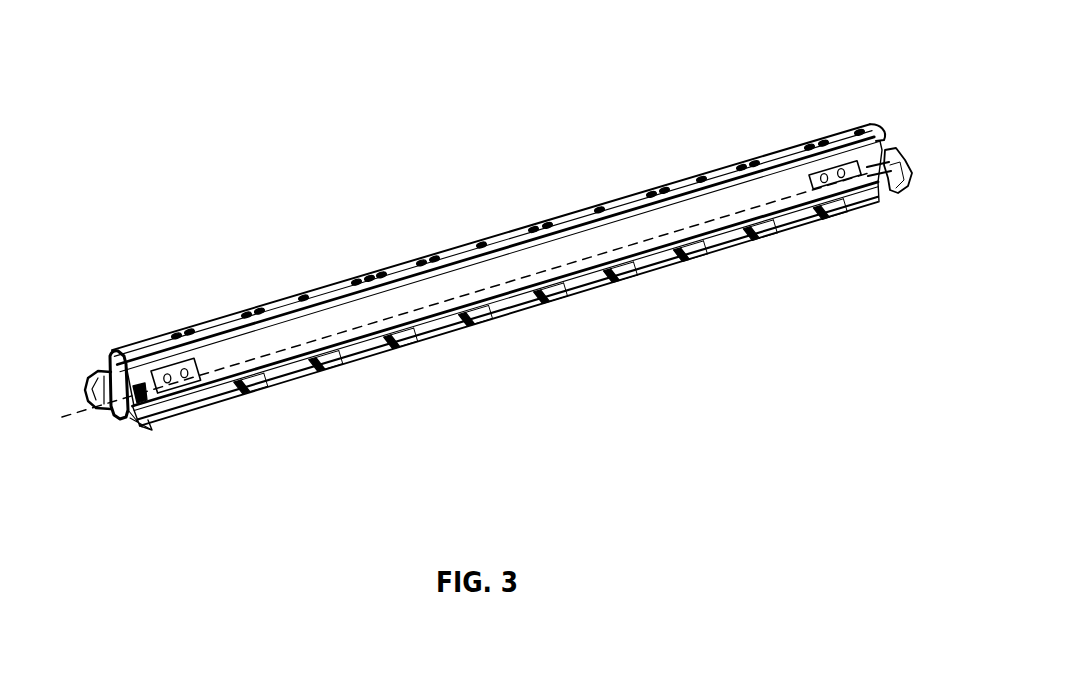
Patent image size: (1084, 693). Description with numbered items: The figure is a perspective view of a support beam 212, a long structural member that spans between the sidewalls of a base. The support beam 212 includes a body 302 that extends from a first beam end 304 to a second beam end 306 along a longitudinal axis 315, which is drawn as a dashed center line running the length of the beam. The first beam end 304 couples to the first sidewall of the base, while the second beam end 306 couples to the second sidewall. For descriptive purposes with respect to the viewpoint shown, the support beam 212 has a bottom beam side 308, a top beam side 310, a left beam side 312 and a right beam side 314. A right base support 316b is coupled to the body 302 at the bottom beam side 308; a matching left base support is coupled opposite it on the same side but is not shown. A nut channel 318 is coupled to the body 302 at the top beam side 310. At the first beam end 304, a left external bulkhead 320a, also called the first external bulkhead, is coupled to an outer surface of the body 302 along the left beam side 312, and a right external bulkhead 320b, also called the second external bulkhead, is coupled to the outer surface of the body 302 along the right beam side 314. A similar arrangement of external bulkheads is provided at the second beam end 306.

The support beam 212 is at (655, 225).
The body 302 is at (480, 293).
The first beam end 304 is at (97, 410).
The second beam end 306 is at (880, 112).
The bottom beam side 308 is at (506, 326).
The top beam side 310 is at (471, 270).
The left beam side 312 is at (248, 311).
The right beam side 314 is at (343, 325).
The longitudinal axis 315 is at (739, 213).
The right base support 316b is at (604, 294).
The nut channel 318 is at (563, 209).
The left external bulkhead 320a is at (98, 372).
The right external bulkhead 320b is at (160, 390).